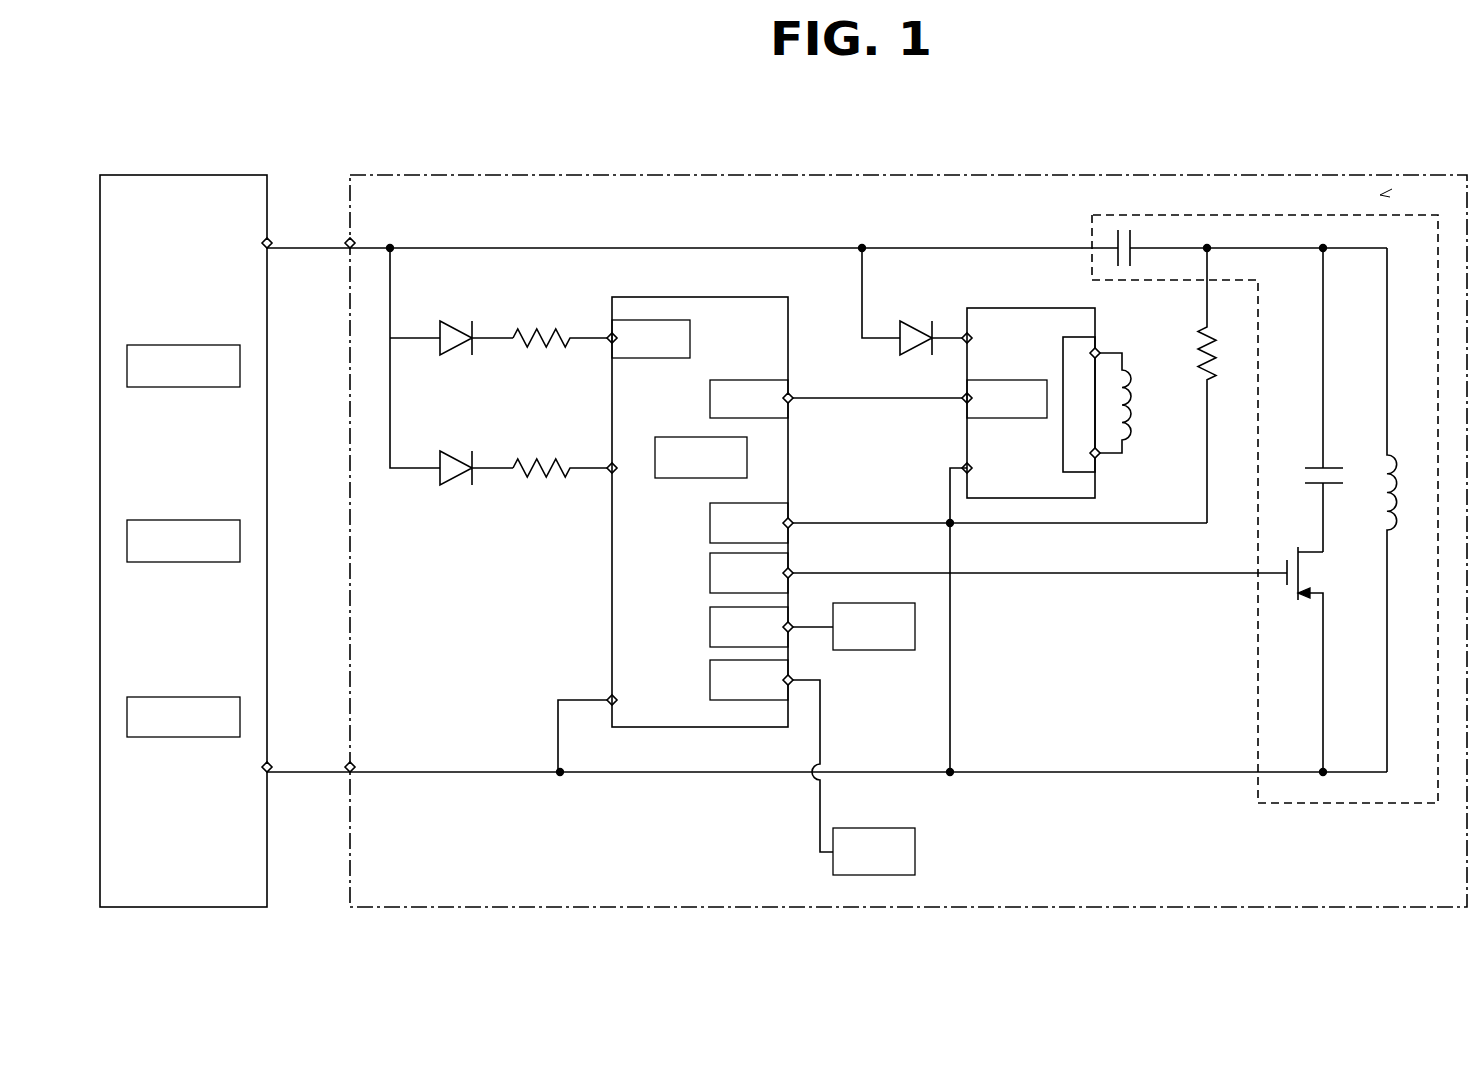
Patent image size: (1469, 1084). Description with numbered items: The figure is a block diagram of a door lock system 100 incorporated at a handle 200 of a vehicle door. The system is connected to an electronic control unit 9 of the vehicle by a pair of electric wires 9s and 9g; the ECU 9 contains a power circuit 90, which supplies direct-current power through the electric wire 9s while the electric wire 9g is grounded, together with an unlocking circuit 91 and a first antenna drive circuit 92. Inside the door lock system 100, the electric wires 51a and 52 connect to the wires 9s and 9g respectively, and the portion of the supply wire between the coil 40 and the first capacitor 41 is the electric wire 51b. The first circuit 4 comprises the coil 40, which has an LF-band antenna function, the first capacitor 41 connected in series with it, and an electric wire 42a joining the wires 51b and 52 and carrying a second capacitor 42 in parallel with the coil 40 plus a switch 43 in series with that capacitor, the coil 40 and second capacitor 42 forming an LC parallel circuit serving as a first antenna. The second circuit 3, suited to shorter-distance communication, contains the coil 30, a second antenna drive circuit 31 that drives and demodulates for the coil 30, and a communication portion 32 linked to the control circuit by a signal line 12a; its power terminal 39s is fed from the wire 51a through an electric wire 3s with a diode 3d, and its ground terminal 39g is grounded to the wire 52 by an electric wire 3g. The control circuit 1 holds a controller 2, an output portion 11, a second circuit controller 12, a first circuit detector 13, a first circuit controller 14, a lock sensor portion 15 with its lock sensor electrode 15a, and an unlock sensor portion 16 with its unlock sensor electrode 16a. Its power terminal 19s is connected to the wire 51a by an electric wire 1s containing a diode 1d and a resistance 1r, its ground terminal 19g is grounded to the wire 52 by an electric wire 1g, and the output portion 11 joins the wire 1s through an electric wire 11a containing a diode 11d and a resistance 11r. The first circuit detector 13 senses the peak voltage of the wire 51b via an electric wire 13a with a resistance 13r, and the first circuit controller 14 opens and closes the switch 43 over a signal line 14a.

The electronic control unit 9 is at (182, 175).
The power circuit 90 is at (170, 345).
The unlocking circuit 91 is at (170, 520).
The first antenna drive circuit 92 is at (170, 697).
The handle 200 is at (507, 173).
The door lock system 100 is at (1380, 195).
The electric wire 51a is at (370, 240).
The electric wire 51b is at (1272, 240).
The electric wire 52 is at (414, 771).
The electric wire 9s is at (302, 246).
The electric wire 9g is at (302, 768).
The electric wire 1s is at (390, 439).
The electric wire 11a is at (411, 338).
The diode 11d is at (458, 330).
The resistance 11r is at (537, 347).
The diode 1d is at (455, 485).
The resistance 1r is at (527, 483).
The power terminal 19s is at (605, 460).
The ground terminal 19g is at (607, 697).
The electric wire 1g is at (556, 729).
The control circuit 1 is at (707, 296).
The output portion 11 is at (690, 337).
The second circuit controller 12 is at (710, 399).
The controller 2 is at (747, 456).
The first circuit detector 13 is at (710, 523).
The first circuit controller 14 is at (710, 574).
The lock sensor portion 15 is at (710, 627).
The unlock sensor portion 16 is at (710, 675).
The electric wire 3s is at (861, 320).
The diode 3d is at (908, 333).
The power terminal 39s is at (965, 335).
The signal line 12a is at (863, 398).
The ground terminal 39g is at (962, 465).
The electric wire 3g is at (950, 655).
The second circuit 3 is at (1019, 308).
The communication portion 32 is at (1007, 380).
The second antenna drive circuit 31 is at (1075, 337).
The coil 30 is at (1137, 430).
The resistance 13r is at (1212, 378).
The electric wire 13a is at (892, 523).
The signal line 14a is at (865, 573).
The lock sensor electrode 15a is at (885, 650).
The unlock sensor electrode 16a is at (915, 850).
The first circuit 4 is at (1164, 215).
The first capacitor 41 is at (1118, 236).
The electric wire 42a is at (1323, 365).
The second capacitor 42 is at (1305, 468).
The switch 43 is at (1285, 594).
The coil 40 is at (1395, 530).